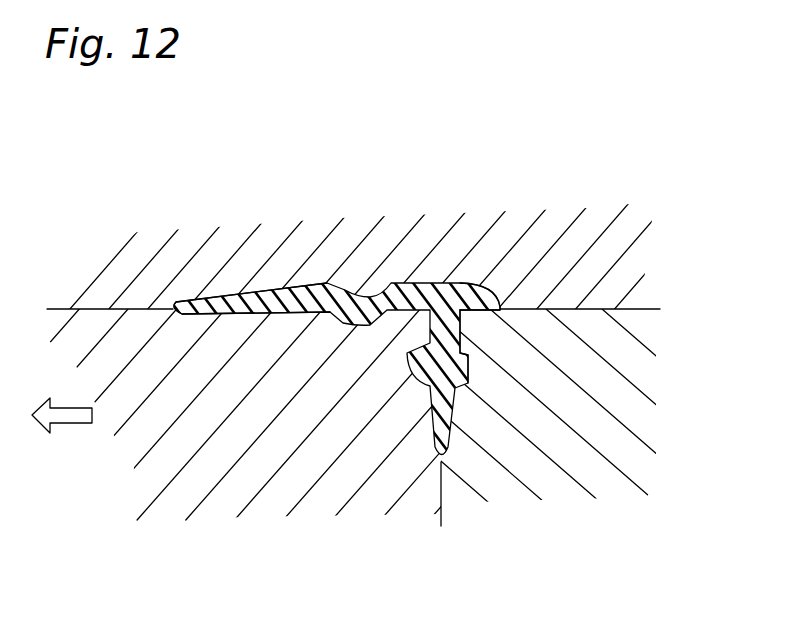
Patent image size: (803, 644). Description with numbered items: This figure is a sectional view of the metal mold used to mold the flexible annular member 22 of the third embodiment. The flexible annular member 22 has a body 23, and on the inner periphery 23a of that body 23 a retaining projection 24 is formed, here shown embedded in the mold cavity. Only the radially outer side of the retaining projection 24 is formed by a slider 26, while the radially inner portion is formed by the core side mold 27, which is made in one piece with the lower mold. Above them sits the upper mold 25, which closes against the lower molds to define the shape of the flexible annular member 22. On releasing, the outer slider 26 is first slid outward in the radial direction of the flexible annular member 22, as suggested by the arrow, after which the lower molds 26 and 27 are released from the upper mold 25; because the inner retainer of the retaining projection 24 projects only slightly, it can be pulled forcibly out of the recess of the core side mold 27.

The flexible annular member 22 is at (403, 283).
The body 23 is at (270, 300).
The inner periphery 23a is at (487, 292).
The retaining projection 24 is at (458, 333).
The upper mold 25 is at (178, 273).
The slider 26 is at (277, 487).
The core side mold 27 is at (577, 462).